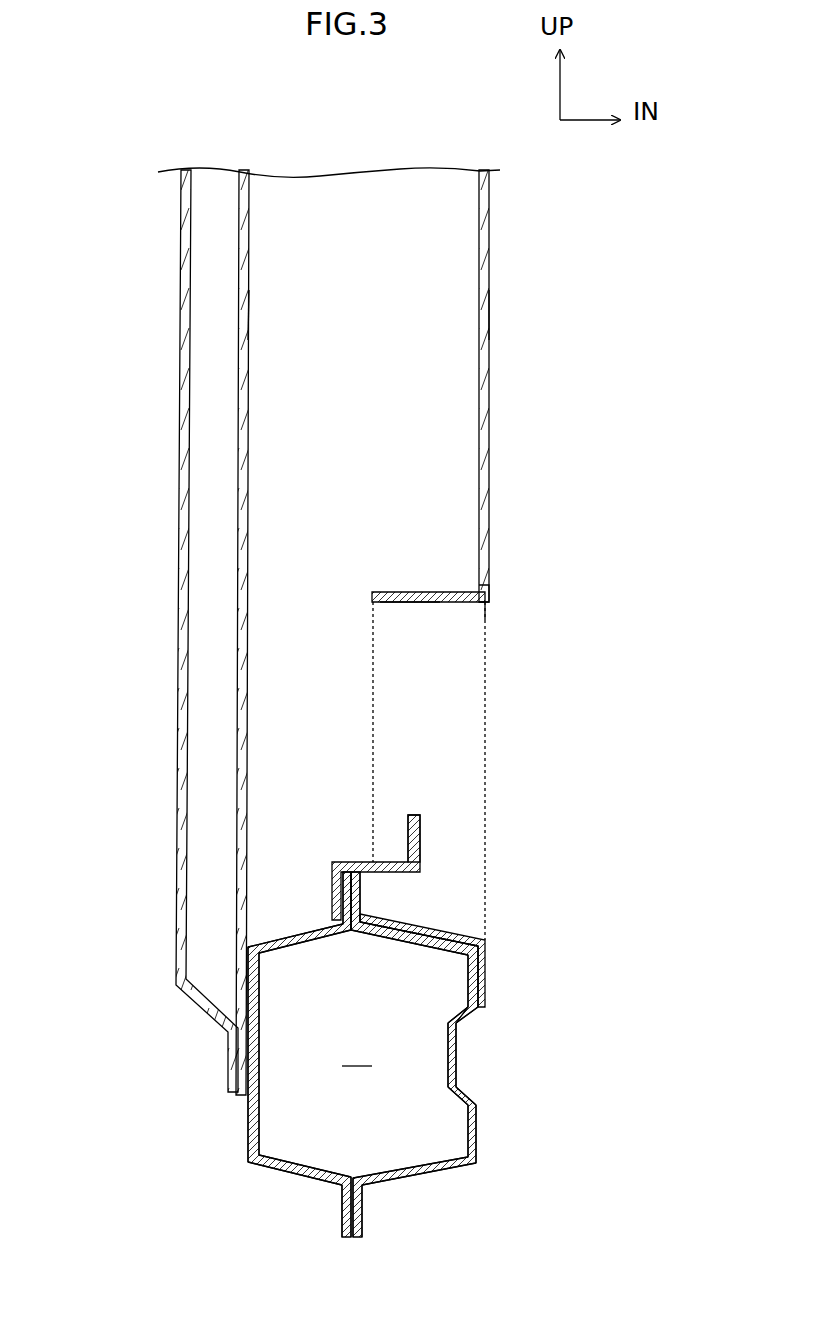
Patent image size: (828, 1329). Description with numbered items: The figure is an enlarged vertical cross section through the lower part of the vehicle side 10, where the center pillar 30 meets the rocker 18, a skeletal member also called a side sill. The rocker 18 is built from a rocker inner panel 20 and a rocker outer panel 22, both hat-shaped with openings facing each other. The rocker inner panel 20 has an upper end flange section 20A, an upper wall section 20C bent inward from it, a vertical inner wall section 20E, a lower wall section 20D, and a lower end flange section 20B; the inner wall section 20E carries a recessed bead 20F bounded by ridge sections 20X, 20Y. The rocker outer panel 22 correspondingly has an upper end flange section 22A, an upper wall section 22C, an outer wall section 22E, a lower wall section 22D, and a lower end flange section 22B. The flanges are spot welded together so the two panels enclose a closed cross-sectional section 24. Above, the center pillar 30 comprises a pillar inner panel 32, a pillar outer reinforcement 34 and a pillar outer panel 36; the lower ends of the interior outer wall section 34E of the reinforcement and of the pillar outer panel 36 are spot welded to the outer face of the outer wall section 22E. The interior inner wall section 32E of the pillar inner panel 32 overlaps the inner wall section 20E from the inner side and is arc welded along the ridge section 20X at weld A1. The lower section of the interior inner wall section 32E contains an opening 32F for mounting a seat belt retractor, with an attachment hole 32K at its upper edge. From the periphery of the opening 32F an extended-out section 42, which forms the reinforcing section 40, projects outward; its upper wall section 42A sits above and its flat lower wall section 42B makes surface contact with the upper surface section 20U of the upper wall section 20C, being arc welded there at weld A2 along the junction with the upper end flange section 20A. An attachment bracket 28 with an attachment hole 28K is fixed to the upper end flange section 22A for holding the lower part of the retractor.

The vehicle side 10 is at (108, 160).
The center pillar 30 is at (592, 352).
The pillar outer panel 36 is at (173, 252).
The pillar outer reinforcement 34 is at (264, 252).
The interior outer wall section 34E is at (250, 312).
The pillar inner panel 32 is at (507, 252).
The interior inner wall section 32E is at (490, 312).
The attachment hole 32K is at (490, 578).
The opening 32F is at (488, 614).
The reinforcing section 40 is at (397, 565).
The extended-out section 42 is at (436, 588).
The upper wall section 42A is at (410, 603).
The lower wall section 42B is at (446, 919).
The rocker 18 is at (299, 878).
The attachment bracket 28 is at (432, 840).
The attachment hole 28K is at (416, 814).
The closed cross-sectional section 24 is at (375, 1034).
The rocker outer panel 22 is at (243, 1130).
The upper end flange section 22A is at (342, 902).
The upper wall section 22C is at (304, 946).
The lower wall section 22D is at (307, 1160).
The outer wall section 22E is at (246, 1152).
The lower end flange section 22B is at (340, 1205).
The rocker inner panel 20 is at (510, 1045).
The upper end flange section 20A is at (363, 880).
The arc welding section A2 is at (362, 918).
The upper surface section 20U is at (481, 940).
The upper wall section 20C is at (418, 950).
The ridge section 20X is at (487, 1012).
The arc welding section A1 is at (482, 1027).
The recessed bead 20F is at (460, 1060).
The ridge section 20Y is at (475, 1098).
The inner wall section 20E is at (480, 1122).
The lower wall section 20D is at (411, 1162).
The lower end flange section 20B is at (364, 1205).